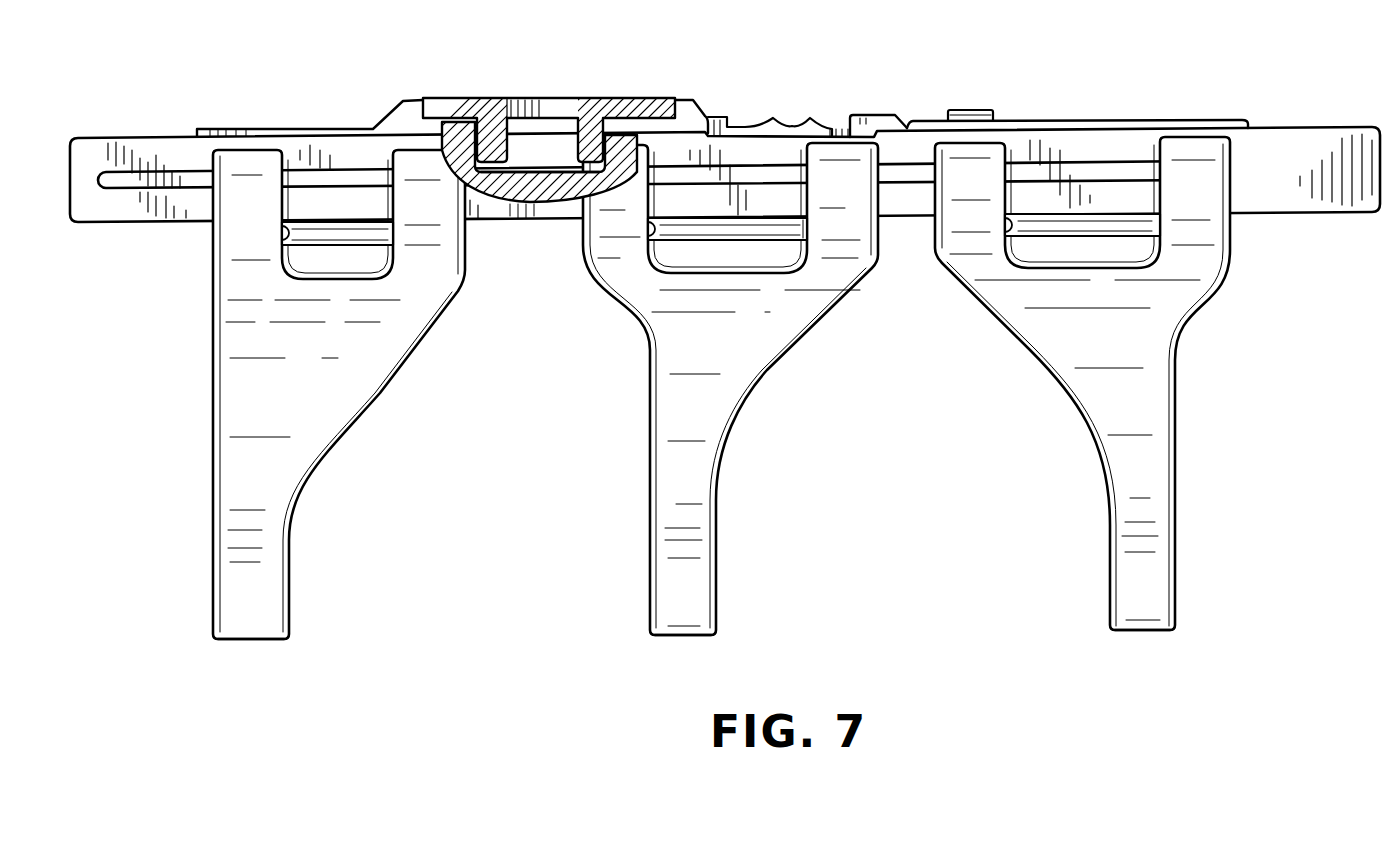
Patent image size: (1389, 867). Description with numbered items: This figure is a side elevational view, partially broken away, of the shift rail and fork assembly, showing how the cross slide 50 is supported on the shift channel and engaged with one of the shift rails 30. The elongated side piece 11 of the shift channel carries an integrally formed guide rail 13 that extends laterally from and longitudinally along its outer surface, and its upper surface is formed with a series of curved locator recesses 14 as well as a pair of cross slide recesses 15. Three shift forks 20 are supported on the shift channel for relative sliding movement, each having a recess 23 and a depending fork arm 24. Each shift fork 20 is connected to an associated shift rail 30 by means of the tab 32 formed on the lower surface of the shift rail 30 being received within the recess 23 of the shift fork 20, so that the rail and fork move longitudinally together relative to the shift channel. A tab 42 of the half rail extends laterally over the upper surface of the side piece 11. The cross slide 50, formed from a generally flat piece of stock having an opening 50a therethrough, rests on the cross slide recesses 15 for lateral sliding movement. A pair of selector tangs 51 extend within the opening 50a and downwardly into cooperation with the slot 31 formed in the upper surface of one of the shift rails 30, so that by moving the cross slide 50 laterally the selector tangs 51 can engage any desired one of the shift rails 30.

The side piece 11 is at (1338, 202).
The guide rail 13 is at (1135, 167).
The locator recess 14 is at (757, 126).
The cross slide recess 15 is at (433, 98).
The shift fork 20 is at (307, 450).
The recess 23 is at (283, 238).
The fork arm 24 is at (252, 642).
The shift rail 30 is at (1082, 119).
The slot 31 is at (540, 172).
The tab 32 is at (372, 240).
The tab 42 is at (970, 110).
The cross slide 50 is at (640, 98).
The opening 50a is at (507, 98).
The selector tang 51 is at (527, 153).